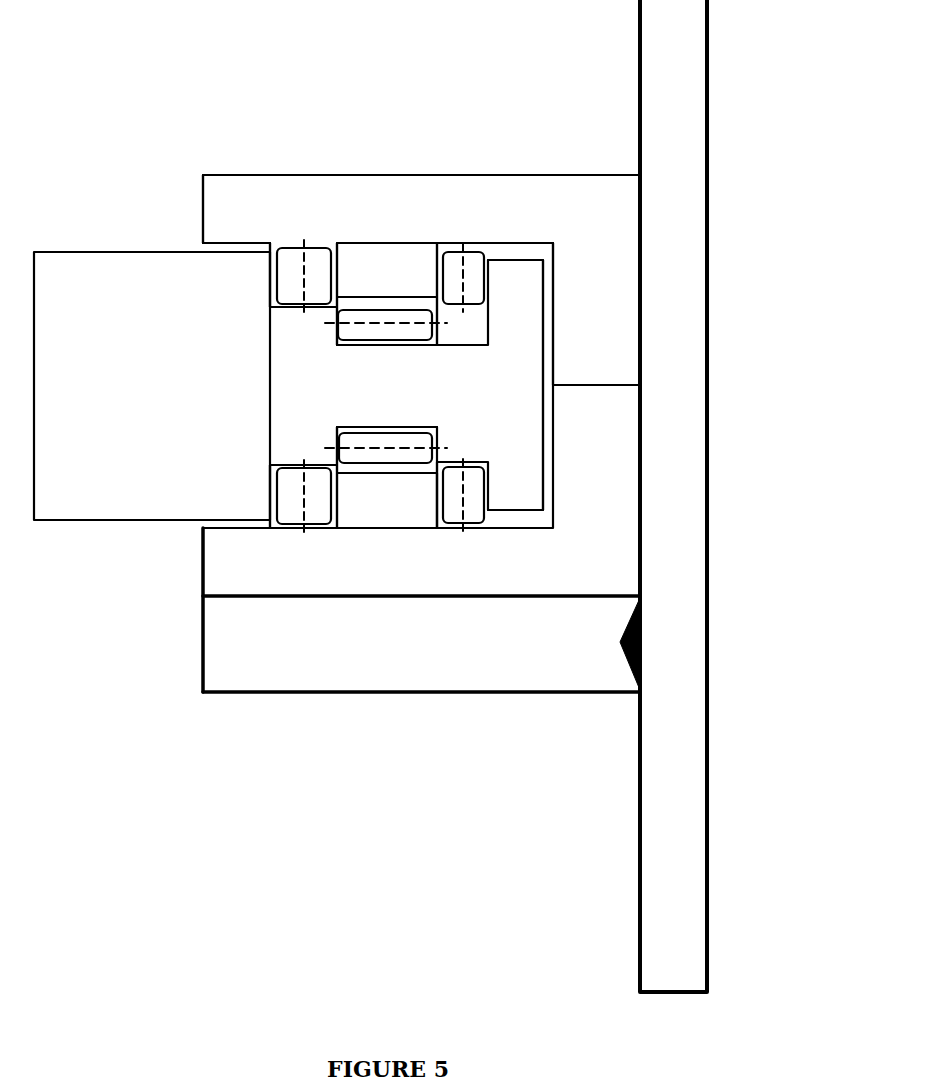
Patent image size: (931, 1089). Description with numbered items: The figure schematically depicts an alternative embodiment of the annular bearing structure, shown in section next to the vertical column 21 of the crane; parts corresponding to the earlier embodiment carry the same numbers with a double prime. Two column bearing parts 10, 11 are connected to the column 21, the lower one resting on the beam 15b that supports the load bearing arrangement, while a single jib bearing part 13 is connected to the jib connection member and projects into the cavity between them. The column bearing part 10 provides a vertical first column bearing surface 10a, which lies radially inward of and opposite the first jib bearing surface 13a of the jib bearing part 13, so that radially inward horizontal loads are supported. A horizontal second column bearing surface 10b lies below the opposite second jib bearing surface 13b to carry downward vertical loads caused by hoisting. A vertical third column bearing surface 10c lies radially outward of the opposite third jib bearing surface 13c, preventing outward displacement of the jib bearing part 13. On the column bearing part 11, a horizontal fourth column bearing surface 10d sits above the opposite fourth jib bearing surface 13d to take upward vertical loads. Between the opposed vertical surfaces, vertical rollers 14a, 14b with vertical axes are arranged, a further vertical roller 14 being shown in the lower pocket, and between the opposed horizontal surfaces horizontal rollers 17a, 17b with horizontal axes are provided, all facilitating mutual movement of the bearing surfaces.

The column bearing part 10 is at (203, 571).
The first column bearing surface 10a is at (342, 277).
The second column bearing surface 10b is at (380, 473).
The third column bearing surface 10c is at (437, 290).
The fourth column bearing surface 10d is at (410, 245).
The column bearing part 11 is at (440, 175).
The jib bearing part 13 is at (127, 253).
The first jib bearing surface 13a is at (270, 298).
The second jib bearing surface 13b is at (357, 377).
The third jib bearing surface 13c is at (488, 288).
The fourth jib bearing surface 13d is at (466, 362).
The vertical roller 14 is at (293, 468).
The first vertical roller 14a is at (290, 248).
The second vertical roller 14b is at (470, 250).
The beam 15b is at (410, 694).
The first horizontal roller 17a is at (407, 428).
The second horizontal roller 17b is at (337, 318).
The vertical column 21 is at (707, 736).